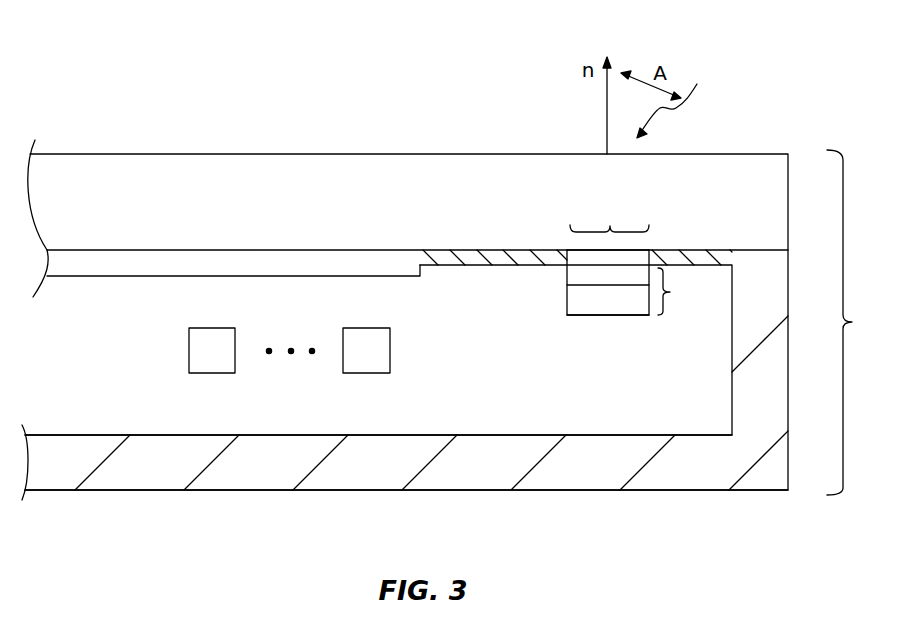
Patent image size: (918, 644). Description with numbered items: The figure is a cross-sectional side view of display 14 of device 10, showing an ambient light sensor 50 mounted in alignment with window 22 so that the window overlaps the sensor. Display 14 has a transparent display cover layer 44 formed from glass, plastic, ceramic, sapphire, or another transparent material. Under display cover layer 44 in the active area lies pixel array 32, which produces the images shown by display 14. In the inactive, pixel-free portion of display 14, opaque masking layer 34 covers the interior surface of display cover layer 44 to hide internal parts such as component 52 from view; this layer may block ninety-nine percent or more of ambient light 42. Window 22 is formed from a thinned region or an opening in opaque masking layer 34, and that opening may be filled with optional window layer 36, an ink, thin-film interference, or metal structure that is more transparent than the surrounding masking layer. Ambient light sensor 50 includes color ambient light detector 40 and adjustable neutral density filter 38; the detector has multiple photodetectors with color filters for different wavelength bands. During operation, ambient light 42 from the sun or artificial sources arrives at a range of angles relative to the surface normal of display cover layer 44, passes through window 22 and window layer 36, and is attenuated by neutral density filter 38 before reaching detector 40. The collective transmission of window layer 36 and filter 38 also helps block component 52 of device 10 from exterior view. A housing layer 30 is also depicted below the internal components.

The device 10 is at (855, 322).
The display 14 is at (287, 98).
The window 22 is at (610, 226).
The housing rear wall 30 is at (95, 479).
The pixel array 32 is at (106, 263).
The opaque masking layer 34 is at (462, 268).
The window layer 36 is at (579, 254).
The adjustable neutral density filter 38 is at (575, 273).
The color ambient light detector 40 is at (607, 302).
The ambient light 42 is at (690, 103).
The display cover layer 44 is at (124, 156).
The ambient light sensor 50 is at (633, 282).
The component 52 is at (210, 366).